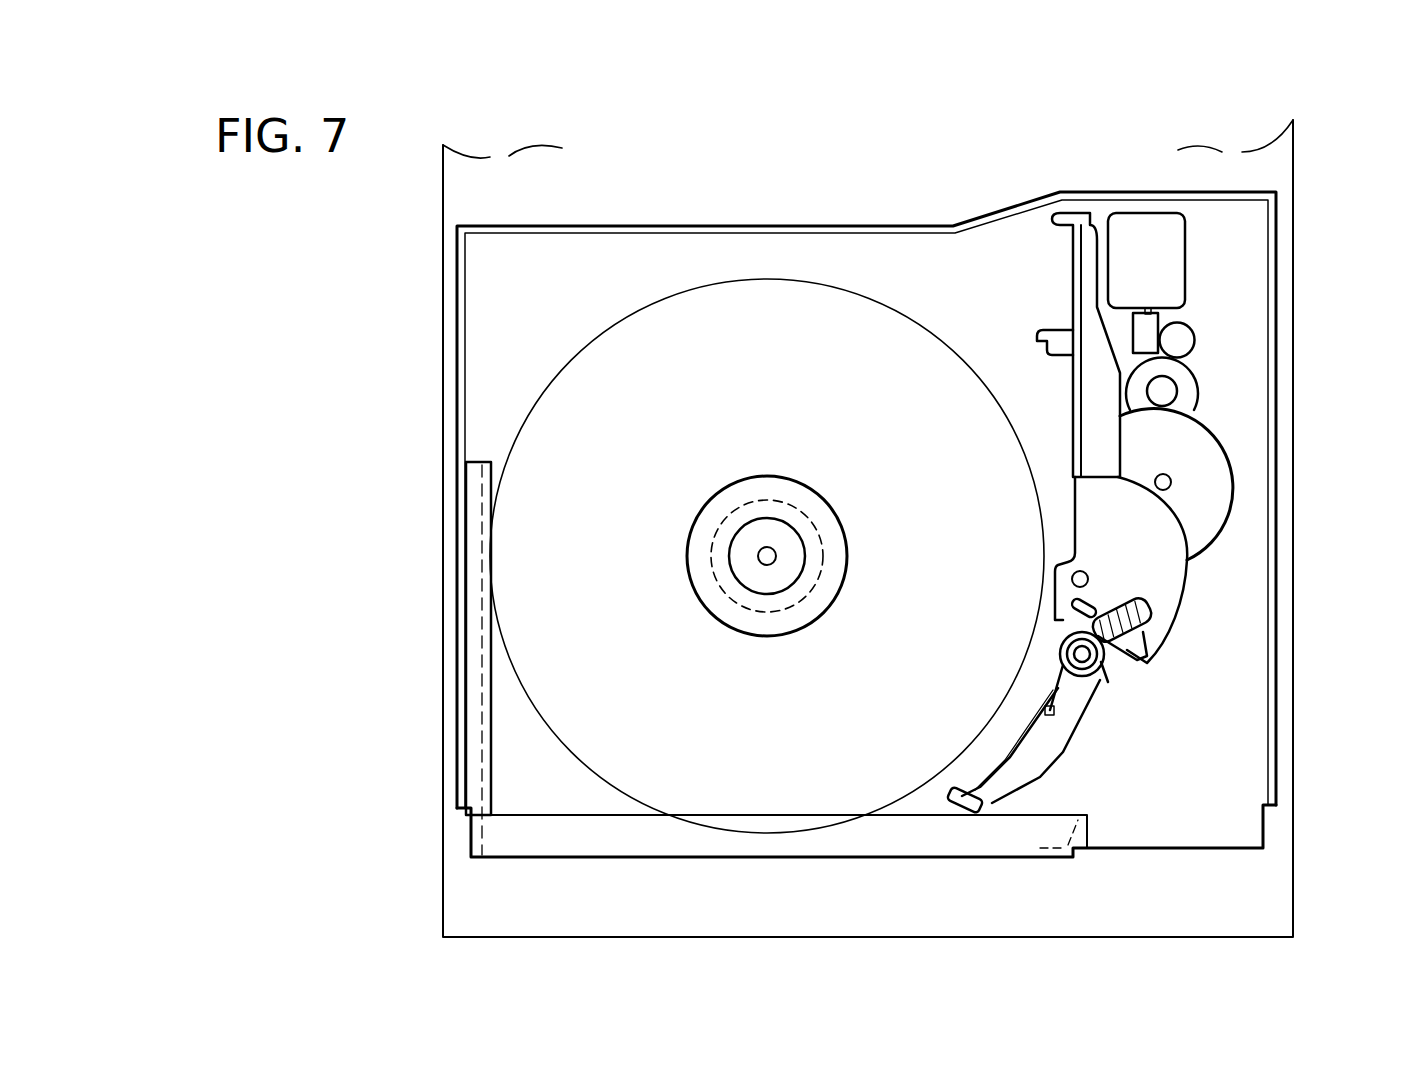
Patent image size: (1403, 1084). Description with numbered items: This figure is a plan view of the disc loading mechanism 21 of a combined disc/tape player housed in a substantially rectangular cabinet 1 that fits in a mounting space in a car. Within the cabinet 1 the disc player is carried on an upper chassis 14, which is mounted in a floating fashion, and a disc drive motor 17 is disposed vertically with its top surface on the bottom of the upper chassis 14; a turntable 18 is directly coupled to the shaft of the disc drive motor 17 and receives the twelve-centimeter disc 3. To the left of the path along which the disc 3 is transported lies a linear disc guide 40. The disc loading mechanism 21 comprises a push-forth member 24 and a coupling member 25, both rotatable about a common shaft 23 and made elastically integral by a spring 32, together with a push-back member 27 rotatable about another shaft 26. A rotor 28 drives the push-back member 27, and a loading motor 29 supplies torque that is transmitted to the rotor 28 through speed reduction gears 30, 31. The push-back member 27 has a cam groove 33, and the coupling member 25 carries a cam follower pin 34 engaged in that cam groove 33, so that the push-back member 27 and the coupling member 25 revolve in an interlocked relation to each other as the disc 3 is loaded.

The cabinet 1 is at (1293, 741).
The disc 3 is at (858, 280).
The upper chassis 14 is at (752, 226).
The disc drive motor 17 is at (741, 510).
The turntable 18 is at (786, 482).
The disc loading mechanism 21 is at (1259, 452).
The shaft 23 is at (1068, 652).
The push-forth member 24 is at (1047, 750).
The coupling member 25 is at (1115, 657).
The shaft 26 is at (1072, 579).
The push-back member 27 is at (1068, 270).
The rotor 28 is at (1242, 506).
The loading motor 29 is at (1172, 260).
The speed reduction gear 30 is at (1186, 340).
The speed reduction gear 31 is at (1190, 392).
The spring 32 is at (1105, 672).
The cam groove 33 is at (1097, 601).
The cam follower pin 34 is at (1152, 612).
The linear disc guide 40 is at (470, 610).